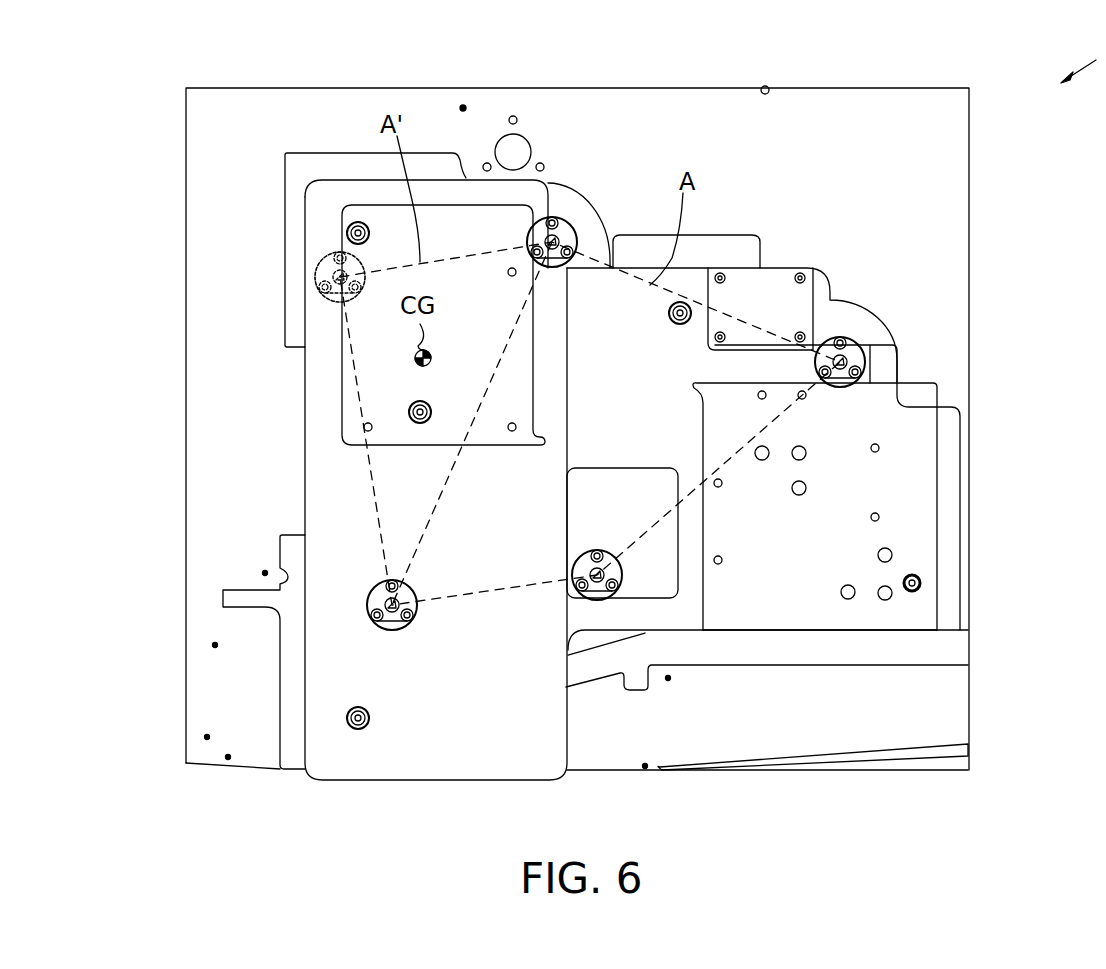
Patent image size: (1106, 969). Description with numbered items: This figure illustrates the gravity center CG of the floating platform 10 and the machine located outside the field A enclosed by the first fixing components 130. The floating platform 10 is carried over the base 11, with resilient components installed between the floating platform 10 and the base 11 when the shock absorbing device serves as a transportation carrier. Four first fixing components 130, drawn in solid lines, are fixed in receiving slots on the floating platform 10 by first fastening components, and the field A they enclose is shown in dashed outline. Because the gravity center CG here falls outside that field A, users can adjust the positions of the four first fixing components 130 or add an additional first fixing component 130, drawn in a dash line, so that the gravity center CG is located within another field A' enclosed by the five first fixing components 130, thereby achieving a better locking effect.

The floating platform 10 is at (780, 283).
The base 11 is at (953, 196).
The first fixing component 130 is at (330, 272).